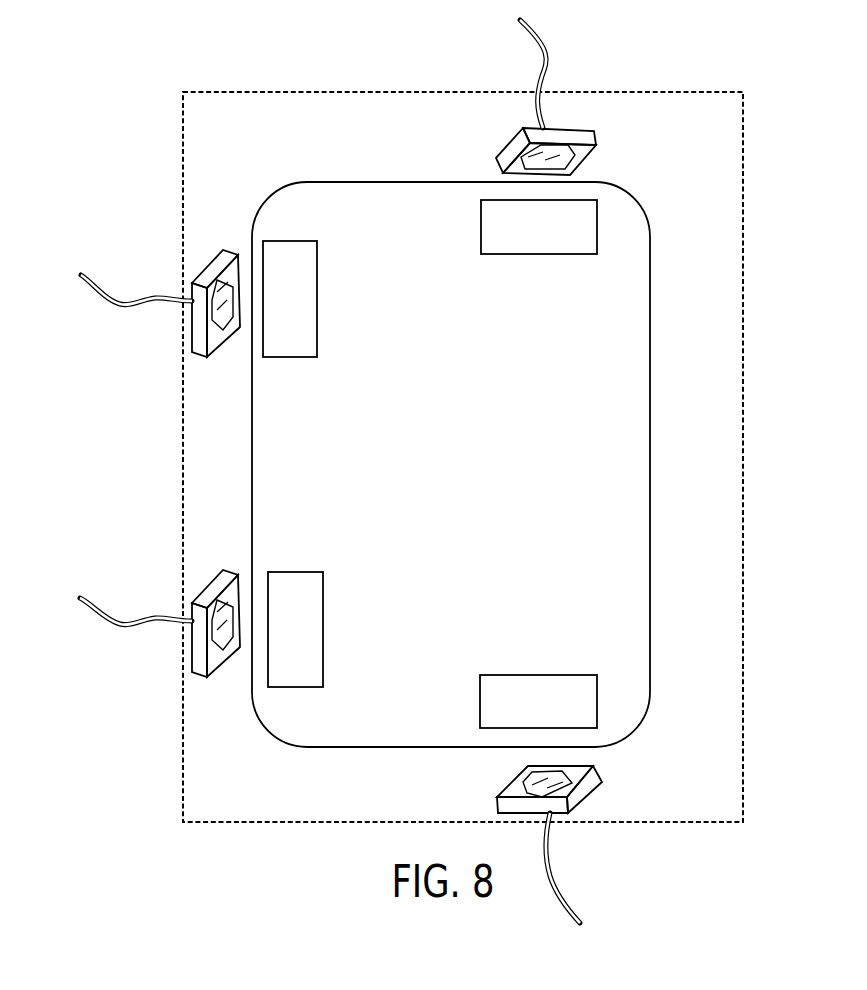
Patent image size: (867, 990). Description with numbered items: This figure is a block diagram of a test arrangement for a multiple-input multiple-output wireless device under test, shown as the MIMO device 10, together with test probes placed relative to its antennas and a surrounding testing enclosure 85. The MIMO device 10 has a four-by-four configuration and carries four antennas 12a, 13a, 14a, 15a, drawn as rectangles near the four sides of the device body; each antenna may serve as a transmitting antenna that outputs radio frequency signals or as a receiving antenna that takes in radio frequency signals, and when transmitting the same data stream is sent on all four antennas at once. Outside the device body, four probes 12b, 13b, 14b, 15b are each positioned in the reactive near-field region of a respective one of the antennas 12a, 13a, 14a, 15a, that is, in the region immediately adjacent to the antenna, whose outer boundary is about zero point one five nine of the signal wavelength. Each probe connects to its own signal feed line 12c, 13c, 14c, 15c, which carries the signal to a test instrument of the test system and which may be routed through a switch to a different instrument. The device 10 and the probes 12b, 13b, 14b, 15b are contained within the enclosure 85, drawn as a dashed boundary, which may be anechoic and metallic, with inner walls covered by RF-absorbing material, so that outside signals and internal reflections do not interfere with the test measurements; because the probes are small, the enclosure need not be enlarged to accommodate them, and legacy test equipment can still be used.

The MIMO device 10 is at (424, 196).
The enclosure 85 is at (213, 823).
The antenna 12a is at (288, 357).
The probe 12b is at (197, 330).
The signal feed line 12c is at (106, 292).
The antenna 13a is at (297, 572).
The probe 13b is at (197, 656).
The signal feed line 13c is at (90, 602).
The antenna 14a is at (537, 675).
The probe 14b is at (594, 792).
The signal feed line 14c is at (573, 898).
The antenna 15a is at (537, 254).
The probe 15b is at (594, 137).
The signal feed line 15c is at (546, 53).